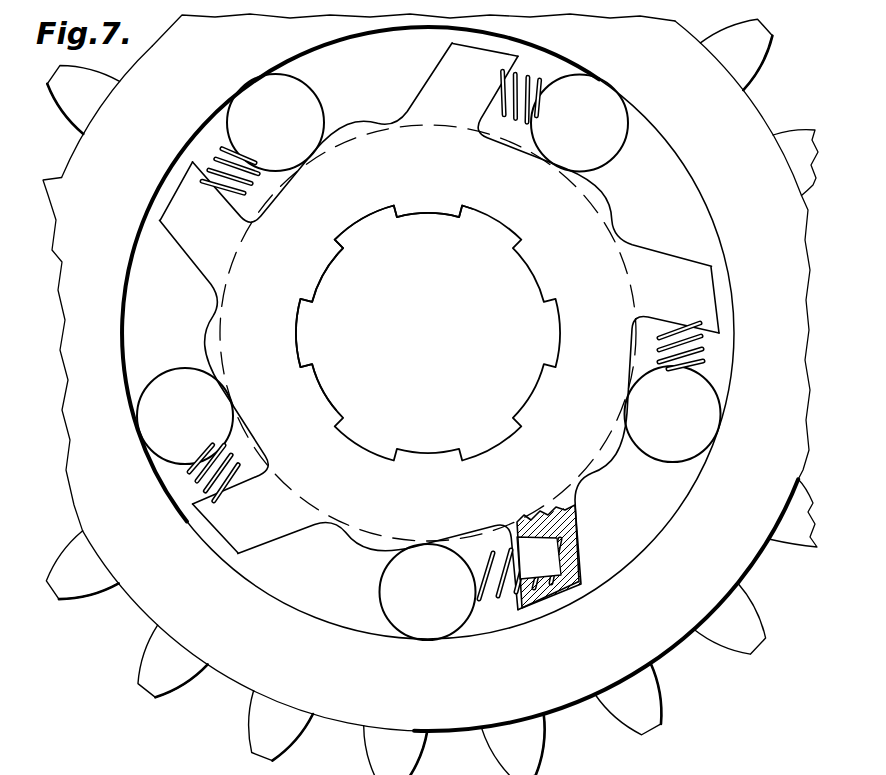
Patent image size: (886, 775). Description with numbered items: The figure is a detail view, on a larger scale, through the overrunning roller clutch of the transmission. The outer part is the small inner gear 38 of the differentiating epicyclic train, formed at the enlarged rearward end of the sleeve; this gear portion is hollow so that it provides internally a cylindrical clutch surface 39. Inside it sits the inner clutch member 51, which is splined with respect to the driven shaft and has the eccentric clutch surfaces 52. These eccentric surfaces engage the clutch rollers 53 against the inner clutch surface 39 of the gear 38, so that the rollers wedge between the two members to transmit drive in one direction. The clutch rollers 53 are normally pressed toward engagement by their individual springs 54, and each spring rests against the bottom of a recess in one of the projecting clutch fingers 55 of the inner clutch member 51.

The small inner gear 38 is at (653, 640).
The cylindrical clutch surface 39 is at (645, 548).
The inner clutch member 51 is at (547, 267).
The eccentric clutch surfaces 52 is at (598, 196).
The clutch rollers 53 is at (702, 423).
The springs 54 is at (705, 350).
The projecting clutch fingers 55 is at (712, 307).